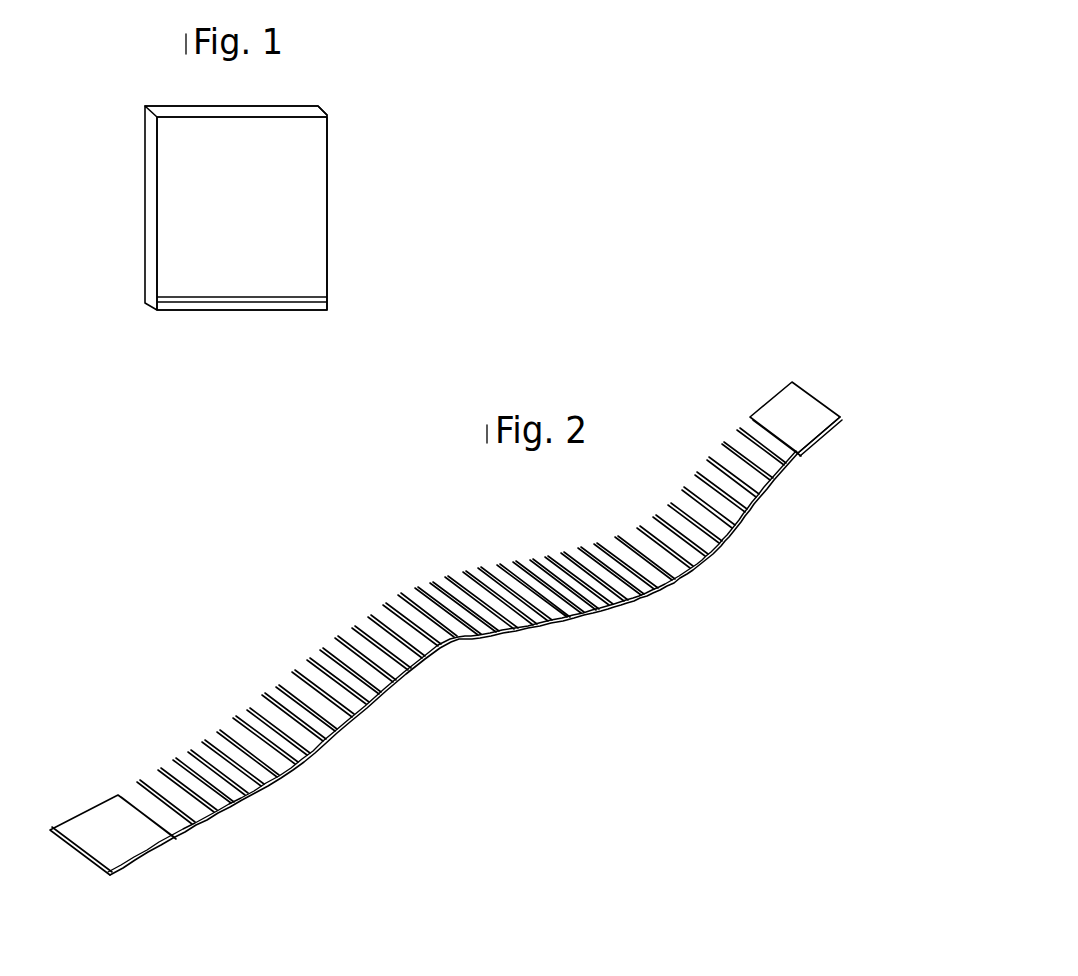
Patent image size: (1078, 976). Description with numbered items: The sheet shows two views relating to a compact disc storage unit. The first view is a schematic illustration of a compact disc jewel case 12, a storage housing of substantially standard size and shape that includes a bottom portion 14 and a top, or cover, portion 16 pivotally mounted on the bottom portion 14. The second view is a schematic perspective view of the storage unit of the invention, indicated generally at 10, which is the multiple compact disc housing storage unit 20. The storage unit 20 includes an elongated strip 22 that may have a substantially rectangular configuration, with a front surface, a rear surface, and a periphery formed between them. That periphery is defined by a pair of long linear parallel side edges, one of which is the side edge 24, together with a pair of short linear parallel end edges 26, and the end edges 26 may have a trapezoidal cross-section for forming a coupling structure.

In FIG. 2, the flexible strip assembly 10 is at (461, 608).
In FIG. 1, the compact disc jewel case 12 is at (305, 108).
In FIG. 1, the bottom portion 14 is at (285, 103).
In FIG. 1, the top portion 16 is at (298, 188).
In FIG. 2, the multiple compact disc housing storage unit 20 is at (850, 440).
In FIG. 2, the elongated strip 22 is at (793, 408).
In FIG. 2, the long linear parallel side edge 24 is at (484, 642).
In FIG. 2, the short linear parallel end edges 26 is at (67, 847).